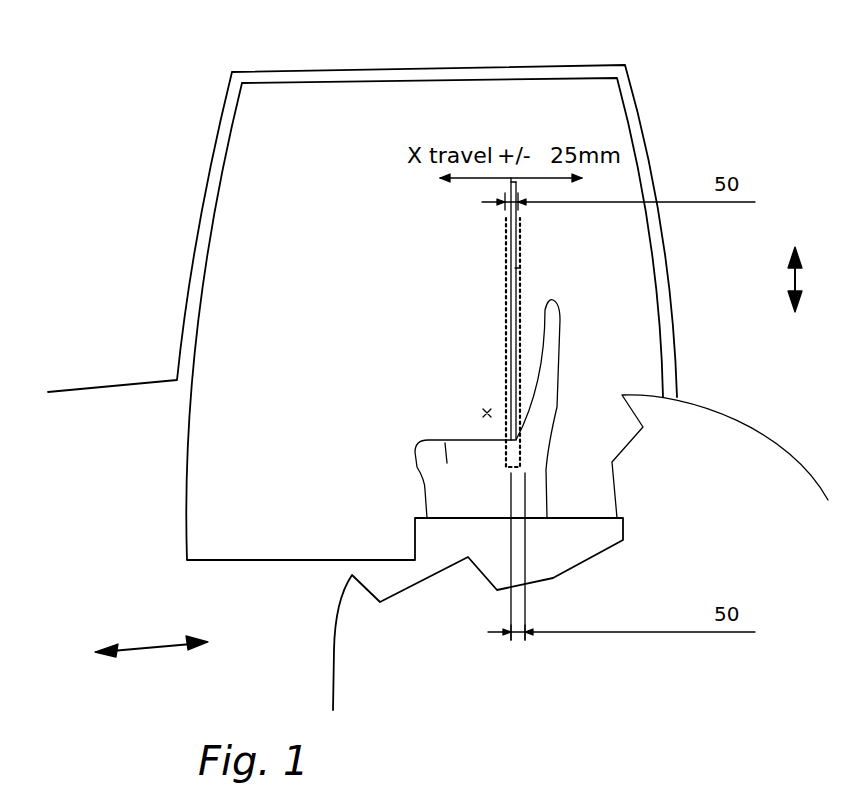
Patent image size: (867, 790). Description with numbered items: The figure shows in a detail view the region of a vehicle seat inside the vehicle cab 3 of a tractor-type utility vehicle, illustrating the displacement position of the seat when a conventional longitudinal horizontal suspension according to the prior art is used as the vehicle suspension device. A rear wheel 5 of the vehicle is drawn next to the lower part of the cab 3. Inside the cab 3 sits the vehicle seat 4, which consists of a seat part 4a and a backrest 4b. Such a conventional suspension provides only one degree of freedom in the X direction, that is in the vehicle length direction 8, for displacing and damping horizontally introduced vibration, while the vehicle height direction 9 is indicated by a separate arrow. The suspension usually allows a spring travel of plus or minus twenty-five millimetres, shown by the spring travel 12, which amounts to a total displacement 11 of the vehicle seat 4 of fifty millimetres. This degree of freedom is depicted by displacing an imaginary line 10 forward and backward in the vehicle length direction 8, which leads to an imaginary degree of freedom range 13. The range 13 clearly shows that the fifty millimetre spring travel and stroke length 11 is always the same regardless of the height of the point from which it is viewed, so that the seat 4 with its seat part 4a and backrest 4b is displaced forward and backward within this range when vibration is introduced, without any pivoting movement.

The vehicle cab 3 is at (630, 118).
The vehicle seat 4 is at (430, 383).
The seat part 4a is at (443, 438).
The backrest 4b is at (550, 363).
The rear wheel 5 is at (723, 467).
The vehicle length direction 8 is at (140, 649).
The vehicle height direction 9 is at (798, 272).
The imaginary line 10 is at (518, 268).
The total displacement 11 is at (517, 185).
The spring travel 12 is at (513, 180).
The imaginary degree of freedom range 13 is at (519, 302).